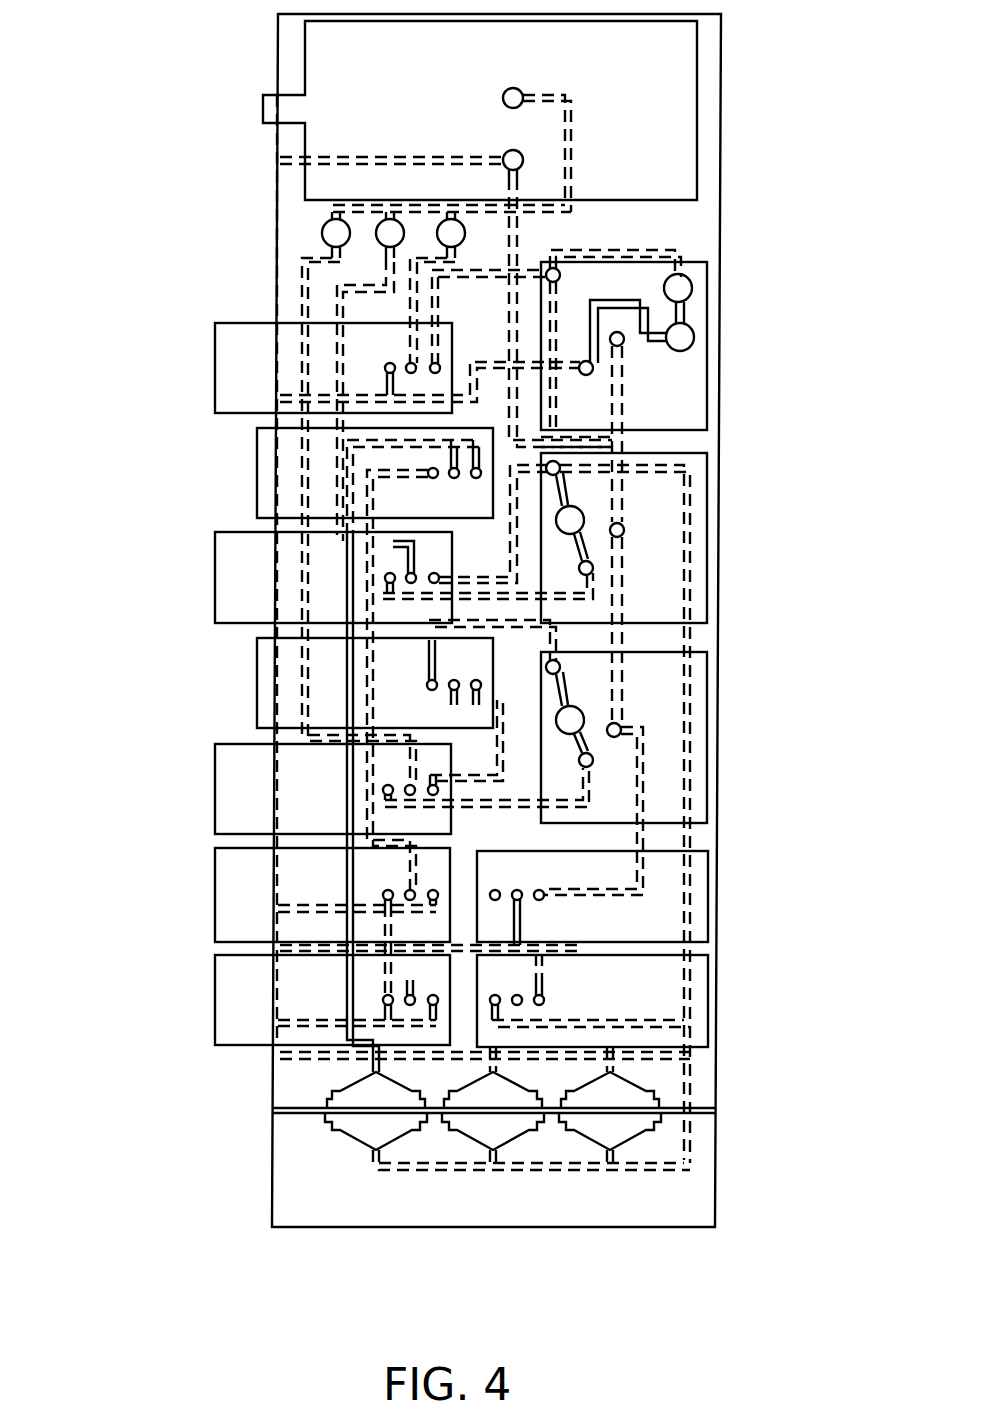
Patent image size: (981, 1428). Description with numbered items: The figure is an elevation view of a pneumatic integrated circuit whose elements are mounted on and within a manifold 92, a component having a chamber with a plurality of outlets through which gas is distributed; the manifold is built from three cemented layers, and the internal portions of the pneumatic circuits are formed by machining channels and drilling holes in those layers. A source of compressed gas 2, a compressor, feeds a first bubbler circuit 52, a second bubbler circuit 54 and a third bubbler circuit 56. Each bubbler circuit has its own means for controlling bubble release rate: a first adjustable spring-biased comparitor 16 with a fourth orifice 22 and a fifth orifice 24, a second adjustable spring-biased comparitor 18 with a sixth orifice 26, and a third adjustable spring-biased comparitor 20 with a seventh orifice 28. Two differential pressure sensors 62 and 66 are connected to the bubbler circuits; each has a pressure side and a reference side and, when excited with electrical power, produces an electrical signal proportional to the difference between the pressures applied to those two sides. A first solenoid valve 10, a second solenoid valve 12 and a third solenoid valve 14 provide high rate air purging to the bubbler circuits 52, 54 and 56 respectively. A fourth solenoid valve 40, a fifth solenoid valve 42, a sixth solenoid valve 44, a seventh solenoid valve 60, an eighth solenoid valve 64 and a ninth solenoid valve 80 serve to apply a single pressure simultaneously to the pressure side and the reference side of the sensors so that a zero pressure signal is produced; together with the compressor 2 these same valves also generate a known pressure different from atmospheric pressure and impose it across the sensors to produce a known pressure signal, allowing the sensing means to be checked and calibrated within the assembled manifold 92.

The source of compressed gas 2 is at (263, 106).
The manifold 92 is at (278, 262).
The first solenoid valve 10 is at (215, 345).
The seventh solenoid valve 60 is at (257, 470).
The second solenoid valve 12 is at (215, 562).
The eighth solenoid valve 64 is at (257, 673).
The third solenoid valve 14 is at (215, 780).
The fourth solenoid valve 40 is at (205, 893).
The first bubbler circuit 52 is at (315, 898).
The sixth solenoid valve 44 is at (208, 990).
The second bubbler circuit 54 is at (325, 1005).
The third bubbler circuit 56 is at (295, 1070).
The differential pressure sensor 62 is at (343, 1143).
The differential pressure sensor 66 is at (685, 1168).
The first adjustable spring-biased comparitor 16 is at (692, 338).
The fourth orifice 22 is at (686, 278).
The fifth orifice 24 is at (690, 330).
The second adjustable spring-biased comparitor 18 is at (681, 804).
The sixth orifice 26 is at (585, 515).
The third adjustable spring-biased comparitor 20 is at (679, 773).
The seventh orifice 28 is at (585, 720).
The ninth solenoid valve 80 is at (708, 903).
The fifth solenoid valve 42 is at (708, 995).